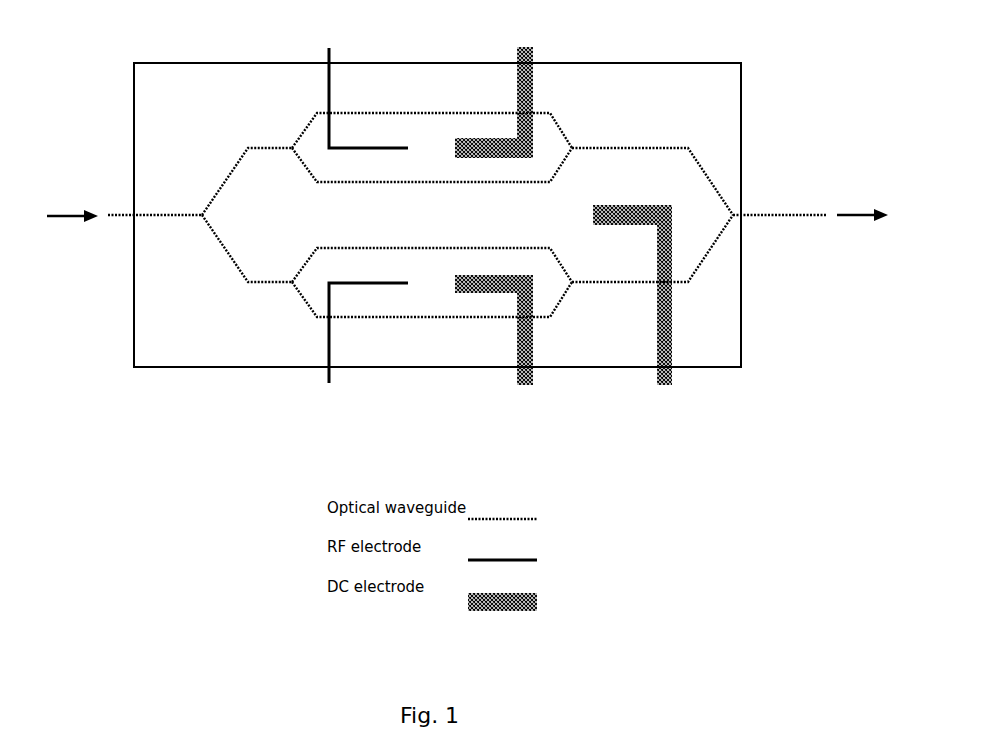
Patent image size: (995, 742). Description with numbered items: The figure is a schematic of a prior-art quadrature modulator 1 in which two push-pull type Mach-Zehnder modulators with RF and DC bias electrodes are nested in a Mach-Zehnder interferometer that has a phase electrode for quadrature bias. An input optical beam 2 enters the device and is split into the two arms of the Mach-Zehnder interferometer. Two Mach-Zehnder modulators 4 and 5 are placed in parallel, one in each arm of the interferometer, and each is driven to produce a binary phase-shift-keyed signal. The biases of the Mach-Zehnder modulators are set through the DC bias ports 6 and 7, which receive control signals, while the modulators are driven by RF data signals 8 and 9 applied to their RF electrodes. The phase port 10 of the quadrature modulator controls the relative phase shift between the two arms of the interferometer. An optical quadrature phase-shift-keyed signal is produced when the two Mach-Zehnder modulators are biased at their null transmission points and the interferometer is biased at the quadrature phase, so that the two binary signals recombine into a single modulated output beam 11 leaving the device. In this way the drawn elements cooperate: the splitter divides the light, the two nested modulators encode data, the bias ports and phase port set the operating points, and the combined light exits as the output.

The quadrature modulator 1 is at (437, 215).
The input optical beam 2 is at (119, 234).
The Mach-Zehnder modulator 4 is at (467, 142).
The Mach-Zehnder modulator 5 is at (467, 286).
The bias port 6 is at (509, 86).
The bias port 7 is at (509, 349).
The RF data signal 8 is at (350, 77).
The RF data signal 9 is at (350, 348).
The phase port 10 is at (647, 314).
The output optical beam 11 is at (810, 232).